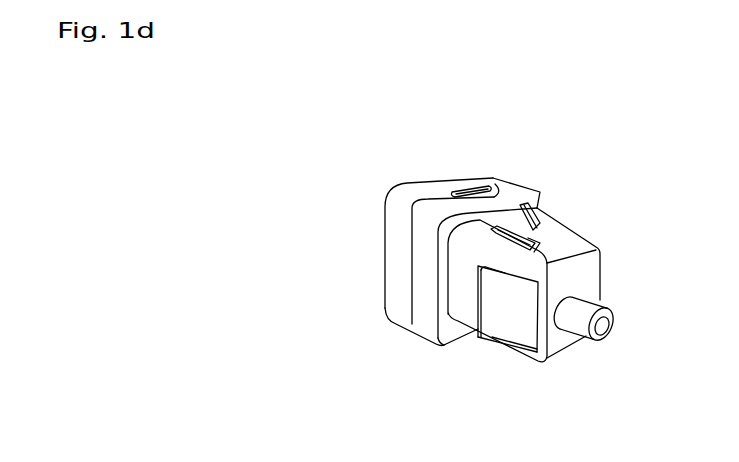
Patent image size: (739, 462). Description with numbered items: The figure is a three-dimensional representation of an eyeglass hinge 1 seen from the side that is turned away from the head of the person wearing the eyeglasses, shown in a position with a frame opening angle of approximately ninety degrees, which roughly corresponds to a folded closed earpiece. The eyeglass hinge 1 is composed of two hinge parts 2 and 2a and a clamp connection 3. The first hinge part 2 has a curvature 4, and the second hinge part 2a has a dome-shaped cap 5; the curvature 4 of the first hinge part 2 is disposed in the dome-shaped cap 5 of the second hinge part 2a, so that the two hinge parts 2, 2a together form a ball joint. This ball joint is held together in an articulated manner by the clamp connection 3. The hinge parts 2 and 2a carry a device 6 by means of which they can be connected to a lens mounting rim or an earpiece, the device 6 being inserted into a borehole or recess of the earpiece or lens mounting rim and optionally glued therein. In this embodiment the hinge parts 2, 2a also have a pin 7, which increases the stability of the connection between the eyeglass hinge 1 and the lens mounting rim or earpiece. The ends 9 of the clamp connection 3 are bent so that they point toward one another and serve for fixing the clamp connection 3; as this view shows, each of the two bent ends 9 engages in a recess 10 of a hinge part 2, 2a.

The eyeglass hinge 1 is at (250, 140).
The hinge part 2 is at (560, 246).
The hinge part 2a is at (521, 189).
The clamp connection 3 is at (541, 219).
The curvature 4 is at (395, 250).
The dome-shaped cap 5 is at (427, 270).
The device 6 is at (480, 185).
The pin 7 is at (580, 321).
The ends 9 is at (488, 307).
The recess 10 is at (514, 344).